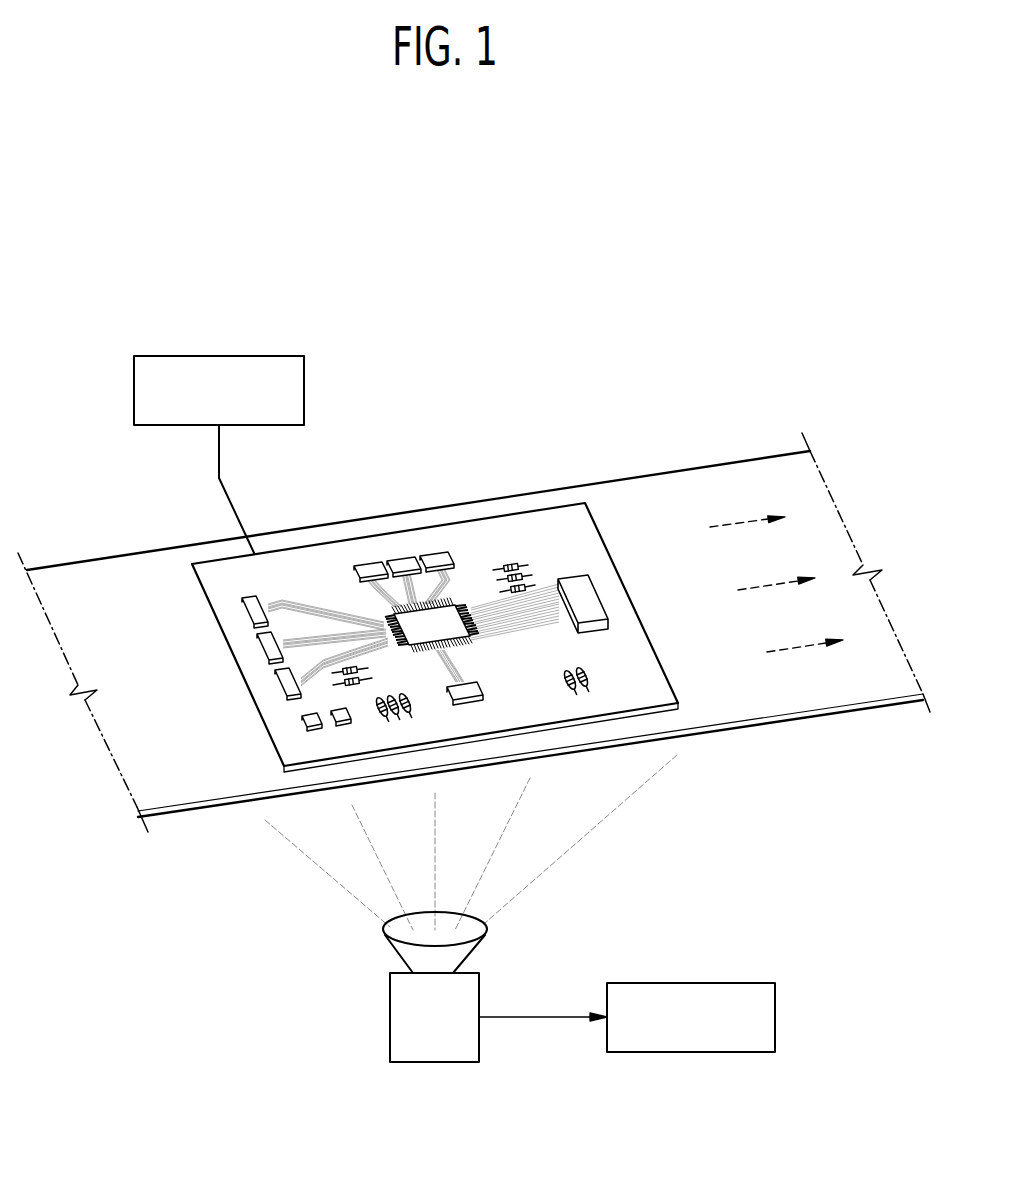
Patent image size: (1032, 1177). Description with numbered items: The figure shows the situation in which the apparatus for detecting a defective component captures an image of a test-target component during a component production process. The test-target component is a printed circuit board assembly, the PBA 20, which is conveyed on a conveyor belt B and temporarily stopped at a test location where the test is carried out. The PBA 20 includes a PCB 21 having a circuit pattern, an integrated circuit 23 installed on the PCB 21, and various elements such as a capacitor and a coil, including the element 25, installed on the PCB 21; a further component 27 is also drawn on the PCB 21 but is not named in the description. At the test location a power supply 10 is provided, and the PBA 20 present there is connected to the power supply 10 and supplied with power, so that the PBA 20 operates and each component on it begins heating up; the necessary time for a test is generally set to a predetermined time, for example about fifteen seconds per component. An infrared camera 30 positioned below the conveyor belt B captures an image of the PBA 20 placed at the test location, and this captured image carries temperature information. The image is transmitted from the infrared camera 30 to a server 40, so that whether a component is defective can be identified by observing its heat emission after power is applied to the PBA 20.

The power supply 10 is at (217, 355).
The PBA 20 is at (474, 638).
The PCB 21 is at (435, 629).
The integrated circuit 23 is at (430, 618).
The element 25 is at (467, 694).
The connector 27 is at (575, 580).
The infrared camera 30 is at (437, 1063).
The server 40 is at (693, 1053).
The conveyor belt B is at (195, 793).